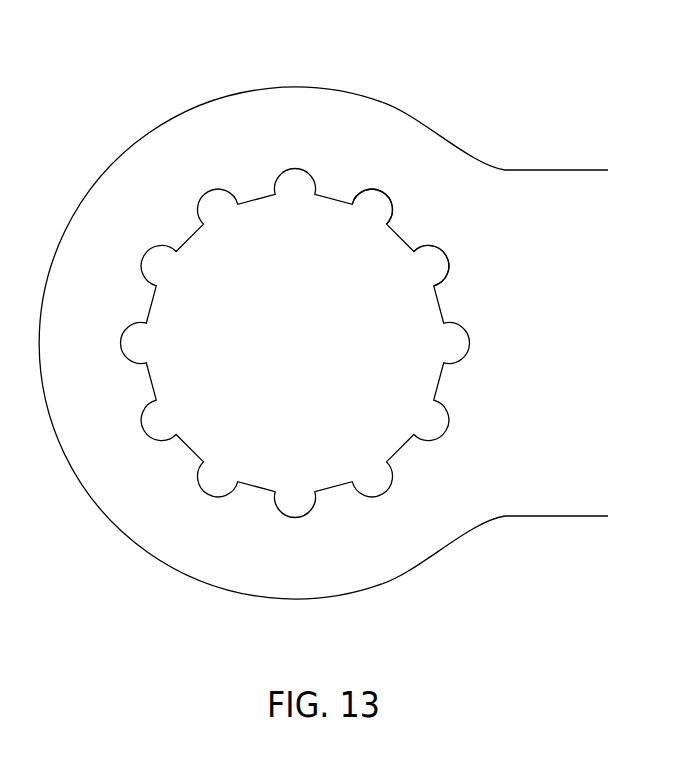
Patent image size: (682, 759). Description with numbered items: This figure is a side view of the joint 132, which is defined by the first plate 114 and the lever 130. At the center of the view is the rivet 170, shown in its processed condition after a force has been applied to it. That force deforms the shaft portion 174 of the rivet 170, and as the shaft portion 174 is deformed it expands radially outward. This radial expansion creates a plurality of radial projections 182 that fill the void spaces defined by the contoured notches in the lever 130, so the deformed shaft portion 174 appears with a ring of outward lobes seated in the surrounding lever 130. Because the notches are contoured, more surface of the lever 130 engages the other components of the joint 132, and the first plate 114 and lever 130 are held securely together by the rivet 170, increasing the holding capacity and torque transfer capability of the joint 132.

The first plate 114 is at (503, 607).
The lever 130 is at (570, 517).
The joint 132 is at (476, 77).
The rivet 170 is at (317, 229).
The shaft portion 174 is at (317, 350).
The radial projections 182 is at (377, 203).